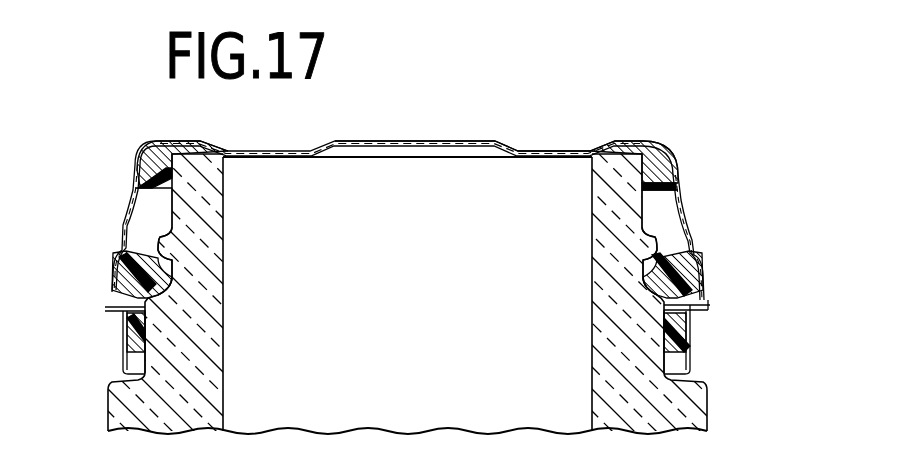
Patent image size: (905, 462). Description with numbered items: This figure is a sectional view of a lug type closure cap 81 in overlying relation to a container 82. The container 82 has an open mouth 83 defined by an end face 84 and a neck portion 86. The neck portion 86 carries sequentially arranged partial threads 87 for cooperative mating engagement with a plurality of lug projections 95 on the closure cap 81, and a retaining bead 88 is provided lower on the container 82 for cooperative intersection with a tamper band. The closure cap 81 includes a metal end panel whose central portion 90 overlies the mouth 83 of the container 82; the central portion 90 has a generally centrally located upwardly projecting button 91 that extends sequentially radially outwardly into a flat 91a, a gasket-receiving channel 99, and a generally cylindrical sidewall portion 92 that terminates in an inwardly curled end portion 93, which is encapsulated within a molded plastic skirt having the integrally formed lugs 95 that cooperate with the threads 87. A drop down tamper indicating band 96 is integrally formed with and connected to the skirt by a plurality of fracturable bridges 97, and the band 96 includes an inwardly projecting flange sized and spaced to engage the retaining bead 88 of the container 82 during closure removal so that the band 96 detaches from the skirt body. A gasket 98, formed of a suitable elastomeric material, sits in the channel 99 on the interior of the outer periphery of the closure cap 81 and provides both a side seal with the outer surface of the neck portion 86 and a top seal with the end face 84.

The lug type closure cap 81 is at (106, 190).
The container 82 is at (96, 422).
The open mouth 83 is at (590, 192).
The end face 84 is at (618, 153).
The neck portion 86 is at (655, 213).
The partial threads 87 is at (165, 245).
The retaining bead 88 is at (146, 338).
The central portion 90 is at (588, 120).
The upwardly projecting button 91 is at (435, 141).
The flat 91a is at (524, 152).
The cylindrical sidewall portion 92 is at (683, 205).
The inwardly curled end portion 93 is at (120, 286).
The lug projections 95 is at (173, 274).
The tamper indicating band 96 is at (124, 357).
The fracturable bridges 97 is at (128, 308).
The gasket 98 is at (669, 153).
The gasket-receiving channel 99 is at (158, 157).